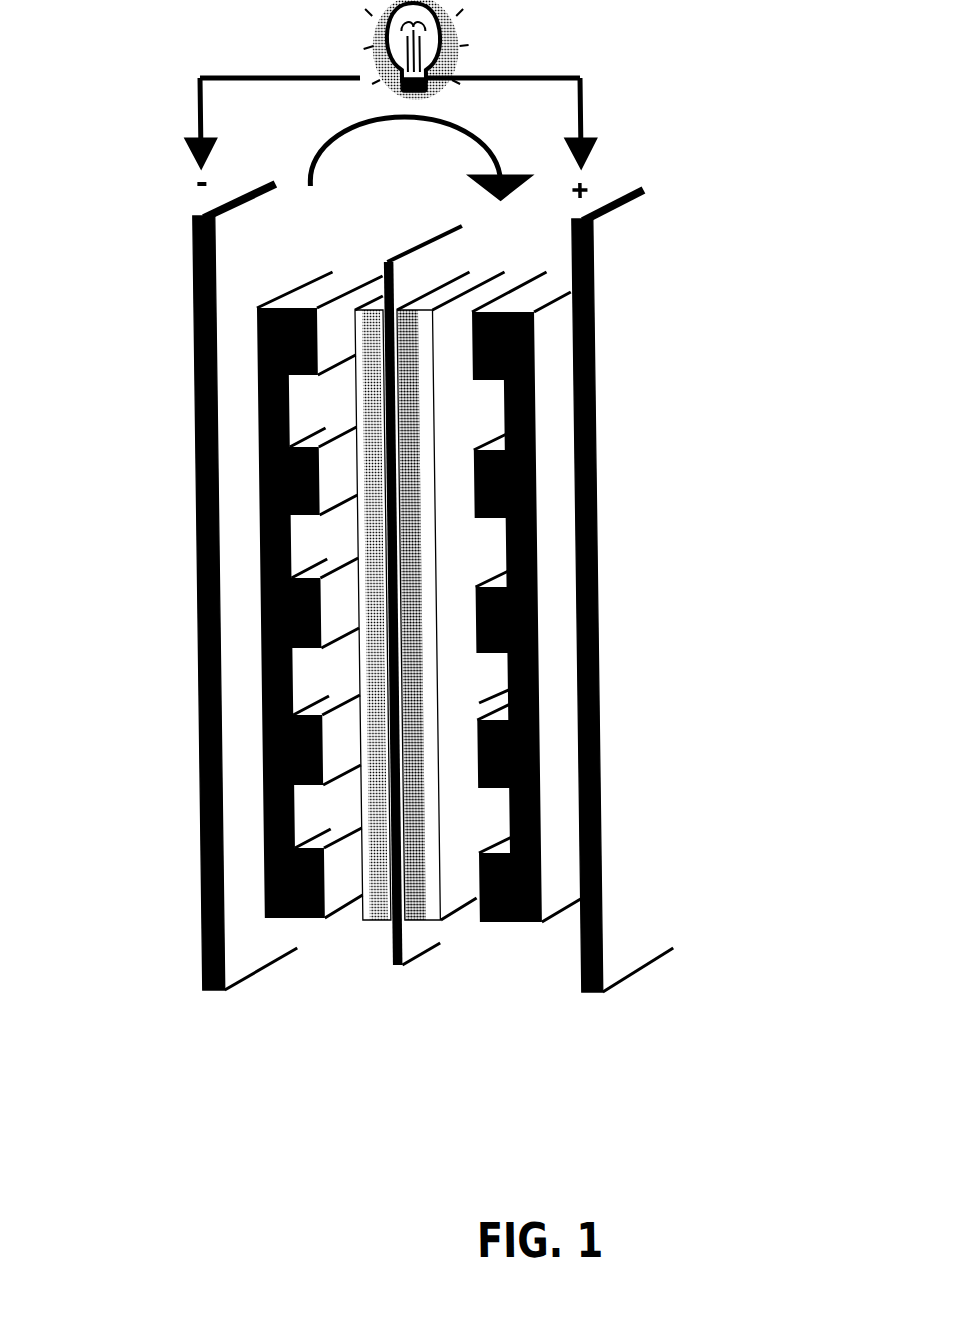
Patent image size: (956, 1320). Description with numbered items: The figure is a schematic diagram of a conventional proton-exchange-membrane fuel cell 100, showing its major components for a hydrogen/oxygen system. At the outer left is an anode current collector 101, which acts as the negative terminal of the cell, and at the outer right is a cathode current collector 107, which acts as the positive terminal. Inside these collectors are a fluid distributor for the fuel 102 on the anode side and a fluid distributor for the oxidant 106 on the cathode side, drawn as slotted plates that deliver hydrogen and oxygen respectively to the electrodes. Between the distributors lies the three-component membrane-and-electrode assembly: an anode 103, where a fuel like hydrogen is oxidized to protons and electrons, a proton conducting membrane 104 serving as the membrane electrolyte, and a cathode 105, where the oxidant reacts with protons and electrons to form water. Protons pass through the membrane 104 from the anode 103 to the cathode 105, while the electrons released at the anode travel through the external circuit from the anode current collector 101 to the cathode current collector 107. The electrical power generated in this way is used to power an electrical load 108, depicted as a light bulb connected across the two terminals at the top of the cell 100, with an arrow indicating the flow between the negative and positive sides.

The PEM fuel cell 100 is at (643, 1029).
The anode current collector 101 is at (178, 240).
The fluid distributor for the fuel 102 is at (307, 276).
The anode 103 is at (389, 405).
The proton conducting membrane 104 is at (390, 562).
The cathode 105 is at (460, 670).
The fluid distributor for the oxidant 106 is at (566, 763).
The cathode current collector 107 is at (615, 250).
The electrical load 108 is at (493, 32).